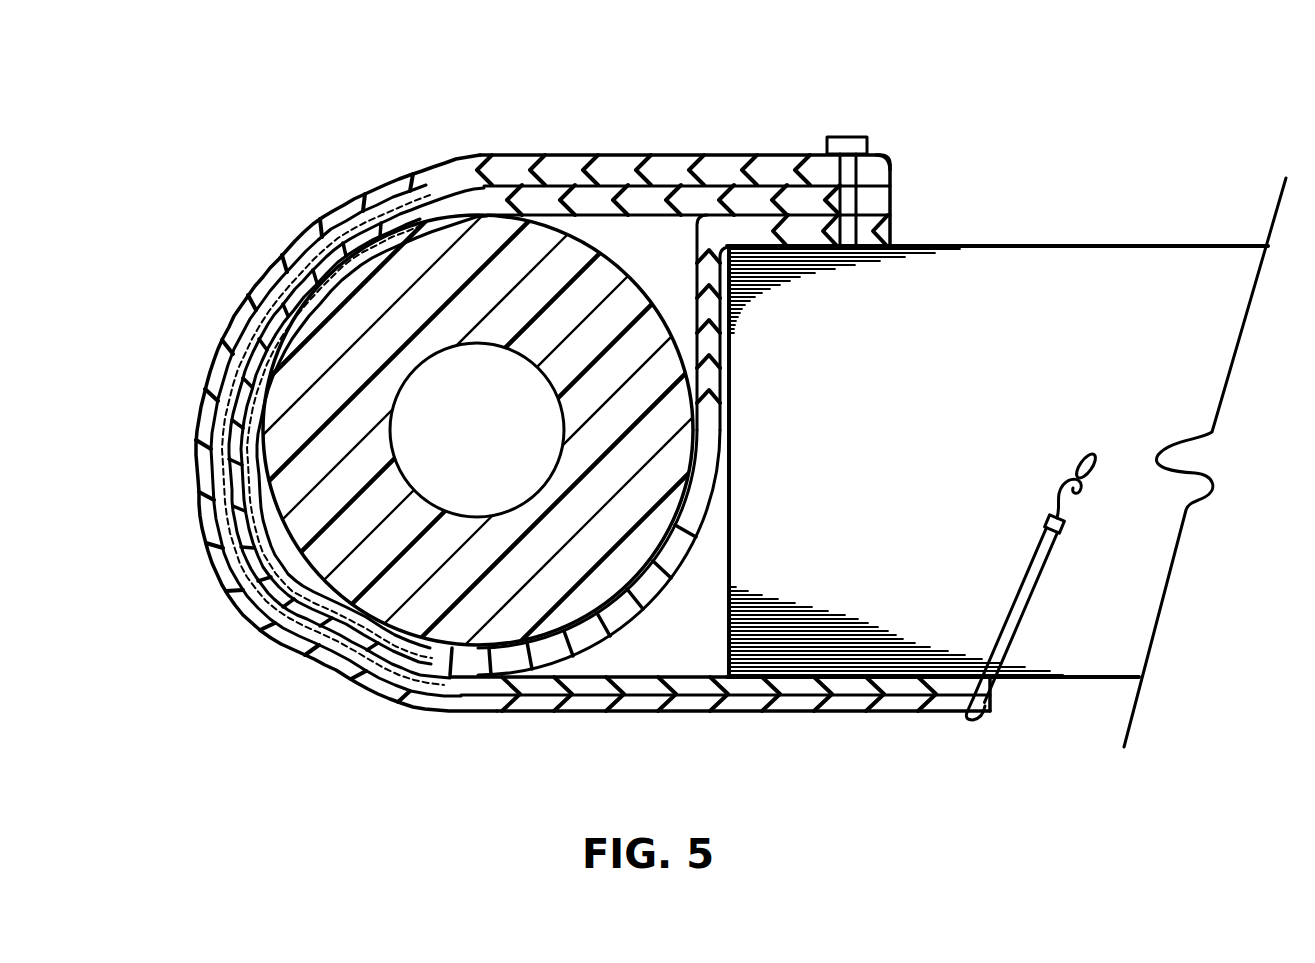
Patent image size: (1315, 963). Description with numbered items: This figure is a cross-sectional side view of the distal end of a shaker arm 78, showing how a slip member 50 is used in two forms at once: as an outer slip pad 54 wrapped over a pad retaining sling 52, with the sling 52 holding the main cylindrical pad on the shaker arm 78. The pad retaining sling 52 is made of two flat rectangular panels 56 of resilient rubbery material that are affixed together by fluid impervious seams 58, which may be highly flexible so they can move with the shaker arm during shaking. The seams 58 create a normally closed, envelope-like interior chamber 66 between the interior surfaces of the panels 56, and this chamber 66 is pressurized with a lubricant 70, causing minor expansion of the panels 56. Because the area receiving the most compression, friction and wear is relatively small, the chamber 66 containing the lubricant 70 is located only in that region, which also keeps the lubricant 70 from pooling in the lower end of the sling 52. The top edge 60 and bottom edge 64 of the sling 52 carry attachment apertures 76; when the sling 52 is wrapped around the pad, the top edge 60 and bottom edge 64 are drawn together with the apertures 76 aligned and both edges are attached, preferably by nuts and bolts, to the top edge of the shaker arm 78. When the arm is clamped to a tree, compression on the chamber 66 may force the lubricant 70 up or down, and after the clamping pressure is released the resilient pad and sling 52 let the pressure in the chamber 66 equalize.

The slip member 50 is at (890, 200).
The pad retaining sling 52 is at (890, 242).
The slip pad 54 is at (620, 156).
The flat rectangular panels 56 is at (790, 700).
The seams 58 is at (470, 197).
The top edge 60 is at (890, 158).
The bottom edge 64 is at (995, 693).
The interior chamber 66 is at (207, 460).
The lubricant 70 is at (317, 283).
The attachment apertures 76 is at (845, 177).
The shaker arm 78 is at (1157, 246).